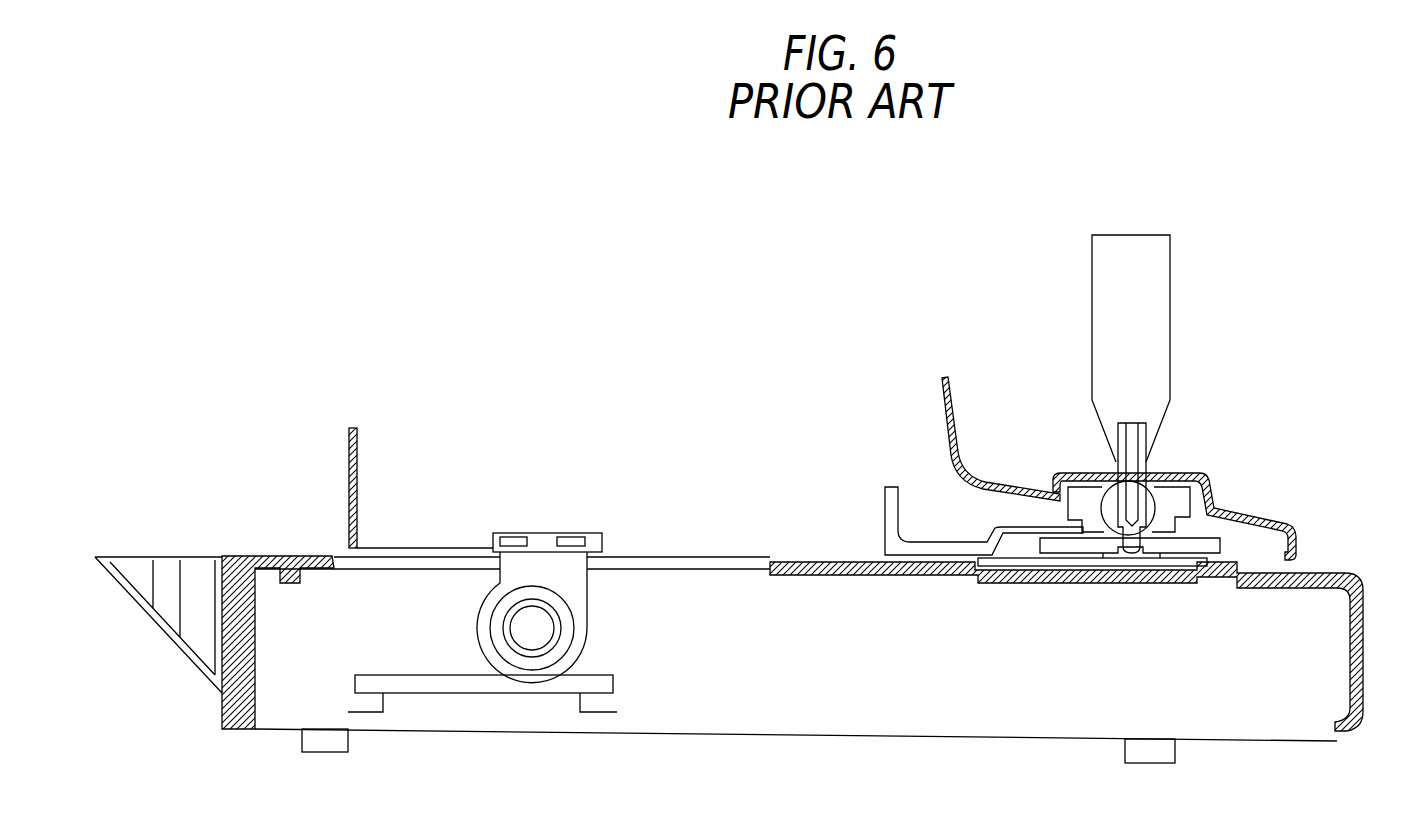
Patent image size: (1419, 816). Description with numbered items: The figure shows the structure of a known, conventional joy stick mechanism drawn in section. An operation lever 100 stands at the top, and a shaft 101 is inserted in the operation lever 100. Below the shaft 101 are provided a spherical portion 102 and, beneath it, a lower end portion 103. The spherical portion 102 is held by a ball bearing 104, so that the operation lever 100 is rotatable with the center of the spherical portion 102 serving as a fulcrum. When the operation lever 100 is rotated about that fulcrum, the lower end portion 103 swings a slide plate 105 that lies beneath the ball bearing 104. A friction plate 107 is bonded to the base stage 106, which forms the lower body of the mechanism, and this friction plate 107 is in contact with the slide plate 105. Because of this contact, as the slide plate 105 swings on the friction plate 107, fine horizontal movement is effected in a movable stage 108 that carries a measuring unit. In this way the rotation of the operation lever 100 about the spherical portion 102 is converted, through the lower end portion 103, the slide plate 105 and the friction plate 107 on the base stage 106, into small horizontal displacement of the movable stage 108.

The operation lever 100 is at (1152, 288).
The shaft 101 is at (1130, 455).
The spherical portion 102 is at (1150, 513).
The lower end portion 103 is at (1132, 557).
The ball bearing 104 is at (1090, 498).
The slide plate 105 is at (1200, 550).
The base stage 106 is at (1345, 580).
The friction plate 107 is at (1038, 565).
The movable stage 108 is at (958, 418).